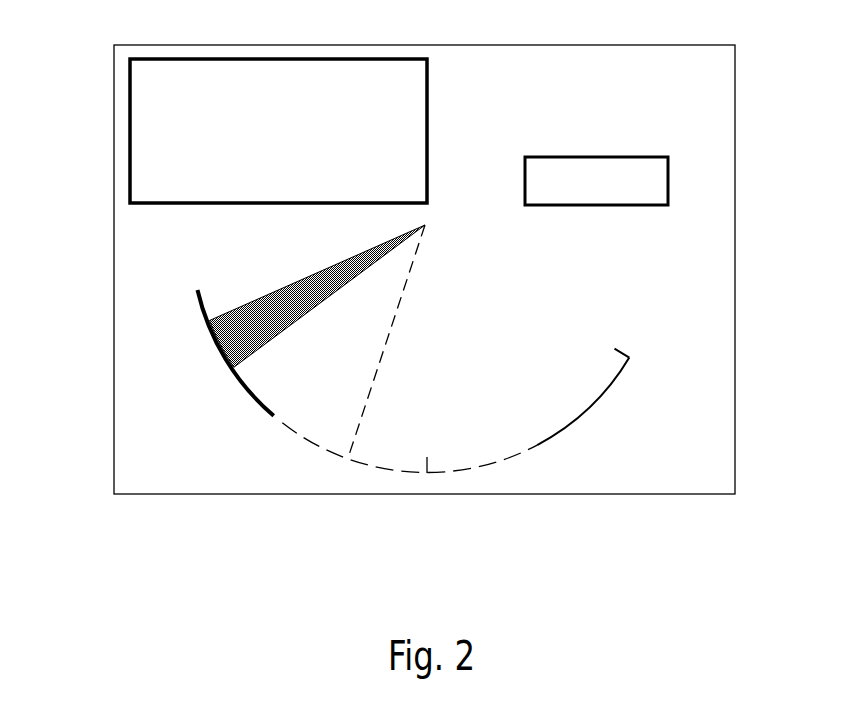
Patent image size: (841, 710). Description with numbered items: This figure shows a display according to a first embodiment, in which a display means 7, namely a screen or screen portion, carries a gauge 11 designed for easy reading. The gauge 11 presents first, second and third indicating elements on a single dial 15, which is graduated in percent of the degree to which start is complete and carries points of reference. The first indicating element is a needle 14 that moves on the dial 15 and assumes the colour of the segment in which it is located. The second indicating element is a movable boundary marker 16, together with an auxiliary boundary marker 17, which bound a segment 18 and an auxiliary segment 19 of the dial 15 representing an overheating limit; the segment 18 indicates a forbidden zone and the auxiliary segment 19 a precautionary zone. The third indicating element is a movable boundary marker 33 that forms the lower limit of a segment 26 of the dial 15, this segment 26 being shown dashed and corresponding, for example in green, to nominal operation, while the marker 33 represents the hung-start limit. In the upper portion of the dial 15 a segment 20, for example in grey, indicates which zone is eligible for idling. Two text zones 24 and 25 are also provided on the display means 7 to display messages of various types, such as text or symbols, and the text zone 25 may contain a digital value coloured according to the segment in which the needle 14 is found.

The display means 7 is at (637, 493).
The gauge 11 is at (229, 476).
The needle 14 is at (370, 410).
The dial 15 is at (620, 377).
The movable boundary marker 16 is at (266, 434).
The auxiliary boundary marker 17 is at (210, 379).
The segment 18 is at (252, 398).
The auxiliary segment 19 is at (232, 362).
The segment 20 is at (251, 311).
The text zone 24 is at (427, 100).
The text zone 25 is at (612, 205).
The segment 26 is at (472, 467).
The movable boundary marker 33 is at (549, 460).